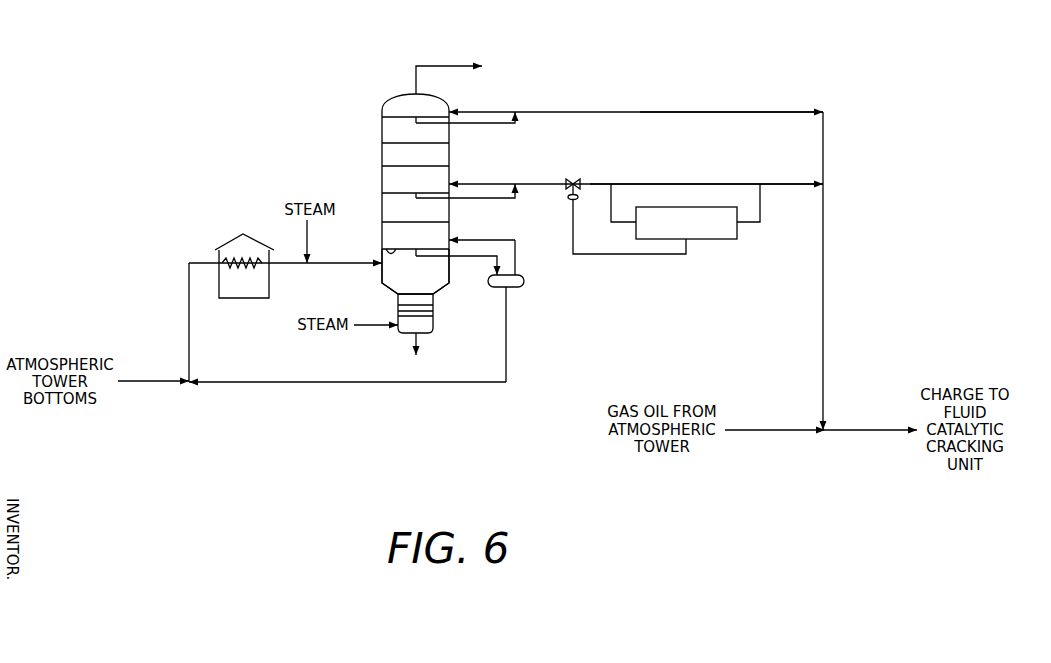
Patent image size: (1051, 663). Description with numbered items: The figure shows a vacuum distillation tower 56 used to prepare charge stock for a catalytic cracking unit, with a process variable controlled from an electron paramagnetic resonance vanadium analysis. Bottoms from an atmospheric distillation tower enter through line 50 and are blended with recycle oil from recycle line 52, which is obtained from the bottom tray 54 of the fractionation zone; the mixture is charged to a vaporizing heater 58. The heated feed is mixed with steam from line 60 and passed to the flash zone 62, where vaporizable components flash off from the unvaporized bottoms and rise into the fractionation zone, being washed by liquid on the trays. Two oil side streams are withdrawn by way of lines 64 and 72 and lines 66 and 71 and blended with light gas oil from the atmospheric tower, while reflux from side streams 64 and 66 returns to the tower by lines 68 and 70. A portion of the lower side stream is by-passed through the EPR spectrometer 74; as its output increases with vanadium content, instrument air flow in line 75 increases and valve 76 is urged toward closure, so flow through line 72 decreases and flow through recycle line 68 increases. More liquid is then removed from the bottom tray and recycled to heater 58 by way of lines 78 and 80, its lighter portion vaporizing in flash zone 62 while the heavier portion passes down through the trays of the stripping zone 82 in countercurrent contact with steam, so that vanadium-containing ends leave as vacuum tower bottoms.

The line 50 is at (158, 381).
The recycle line 52 is at (298, 382).
The bottom tray 54 is at (385, 251).
The vacuum distillation tower 56 is at (382, 160).
The vaporizing heater 58 is at (270, 292).
The steam line 60 is at (308, 228).
The flash zone 62 is at (429, 290).
The side stream line 64 is at (494, 198).
The side stream line 66 is at (494, 123).
The recycle line 68 is at (476, 184).
The reflux line 70 is at (490, 112).
The line 71 is at (648, 112).
The line 72 is at (597, 184).
The EPR spectrometer 74 is at (730, 239).
The instrument air line 75 is at (655, 254).
The valve 76 is at (569, 179).
The line 78 is at (478, 258).
The line 80 is at (506, 322).
The stripping zone 82 is at (435, 306).